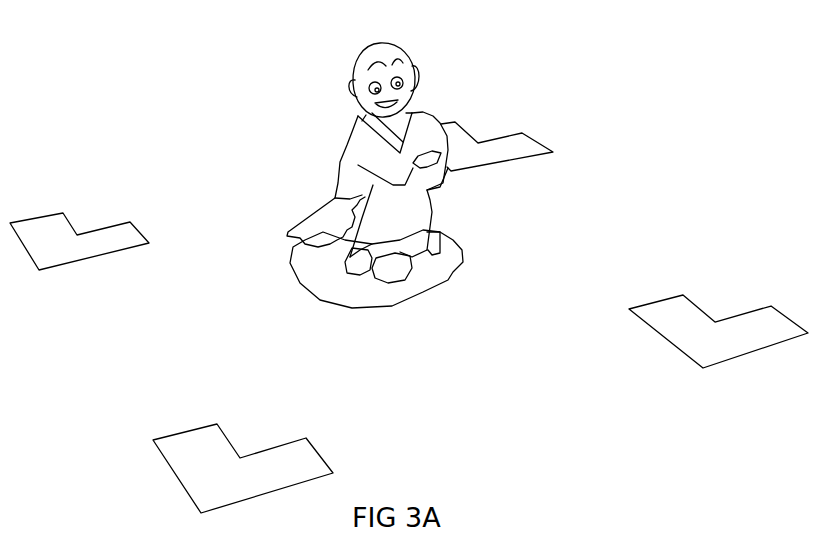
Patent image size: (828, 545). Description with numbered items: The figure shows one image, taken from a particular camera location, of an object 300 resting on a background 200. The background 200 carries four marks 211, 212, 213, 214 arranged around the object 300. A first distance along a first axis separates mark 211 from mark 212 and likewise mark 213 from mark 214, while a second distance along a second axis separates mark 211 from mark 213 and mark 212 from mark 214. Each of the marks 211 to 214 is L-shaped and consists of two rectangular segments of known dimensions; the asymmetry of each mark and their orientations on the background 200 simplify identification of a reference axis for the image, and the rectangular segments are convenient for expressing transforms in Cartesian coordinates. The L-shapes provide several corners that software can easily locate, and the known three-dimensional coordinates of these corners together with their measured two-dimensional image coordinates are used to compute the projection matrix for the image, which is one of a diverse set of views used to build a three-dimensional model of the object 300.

The object 300 is at (368, 45).
The background 200 is at (370, 360).
The mark 211 is at (285, 445).
The mark 212 is at (647, 325).
The mark 213 is at (104, 228).
The mark 214 is at (503, 163).